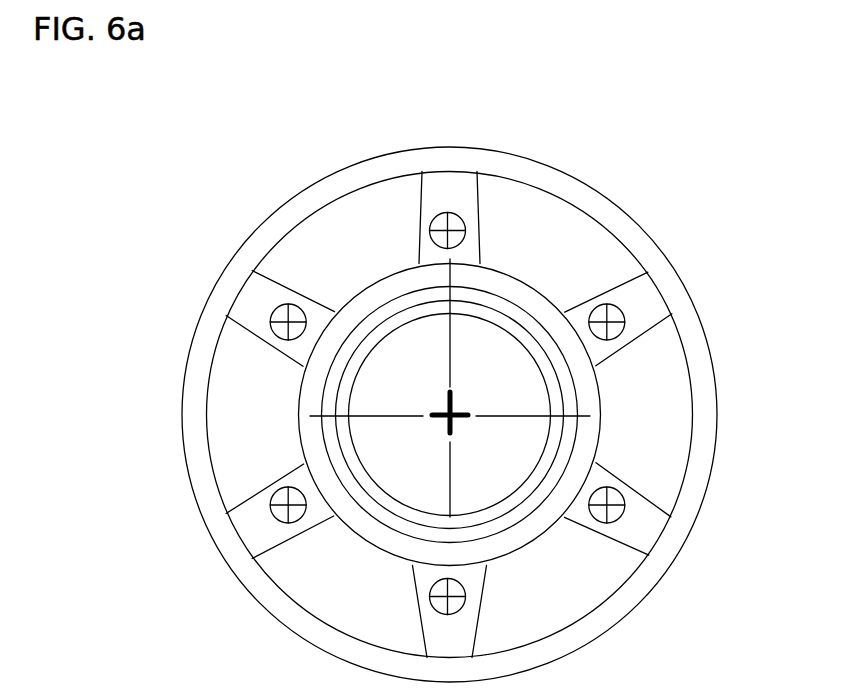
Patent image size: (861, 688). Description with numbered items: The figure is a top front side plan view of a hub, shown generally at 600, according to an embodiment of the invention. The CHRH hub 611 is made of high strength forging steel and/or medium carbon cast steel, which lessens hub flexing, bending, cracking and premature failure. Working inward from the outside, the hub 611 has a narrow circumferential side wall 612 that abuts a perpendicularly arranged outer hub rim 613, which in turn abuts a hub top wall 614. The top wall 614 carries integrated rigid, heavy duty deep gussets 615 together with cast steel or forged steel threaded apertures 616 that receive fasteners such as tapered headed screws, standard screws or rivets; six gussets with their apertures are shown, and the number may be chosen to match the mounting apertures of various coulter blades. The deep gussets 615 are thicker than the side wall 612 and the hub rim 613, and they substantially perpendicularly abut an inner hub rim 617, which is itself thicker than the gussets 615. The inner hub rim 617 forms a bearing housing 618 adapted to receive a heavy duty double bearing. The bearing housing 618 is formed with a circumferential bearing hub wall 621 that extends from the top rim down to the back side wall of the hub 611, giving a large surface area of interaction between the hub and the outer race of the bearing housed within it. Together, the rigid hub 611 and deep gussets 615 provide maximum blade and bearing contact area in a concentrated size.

The hub 600 is at (192, 197).
The CHRH hub 611 is at (463, 146).
The circumferential side wall 612 is at (686, 544).
The outer hub rim 613 is at (709, 396).
The hub top wall 614 is at (552, 223).
The deep gussets 615 is at (634, 284).
The threaded apertures 616 is at (622, 313).
The inner hub rim 617 is at (347, 467).
The bearing housing 618 is at (398, 377).
The circumferential bearing hub wall 621 is at (390, 511).